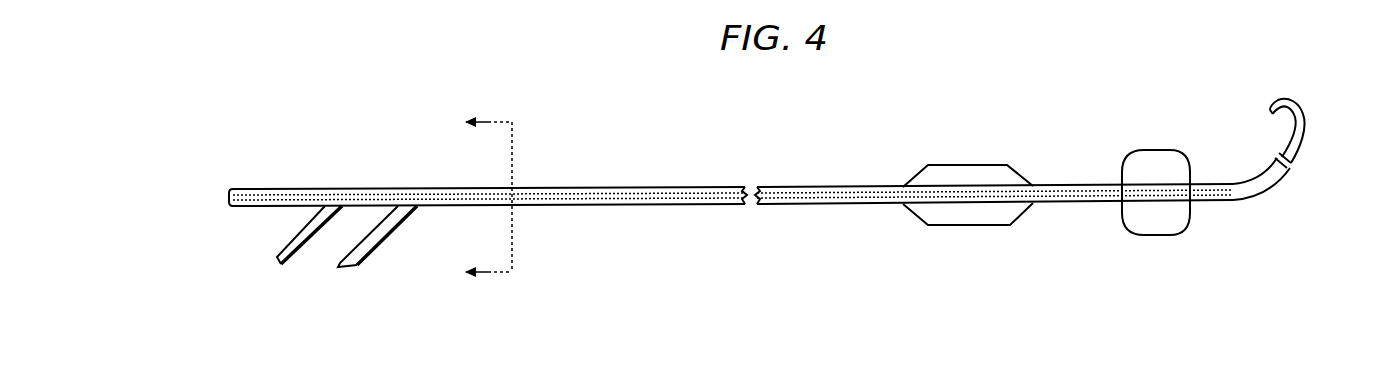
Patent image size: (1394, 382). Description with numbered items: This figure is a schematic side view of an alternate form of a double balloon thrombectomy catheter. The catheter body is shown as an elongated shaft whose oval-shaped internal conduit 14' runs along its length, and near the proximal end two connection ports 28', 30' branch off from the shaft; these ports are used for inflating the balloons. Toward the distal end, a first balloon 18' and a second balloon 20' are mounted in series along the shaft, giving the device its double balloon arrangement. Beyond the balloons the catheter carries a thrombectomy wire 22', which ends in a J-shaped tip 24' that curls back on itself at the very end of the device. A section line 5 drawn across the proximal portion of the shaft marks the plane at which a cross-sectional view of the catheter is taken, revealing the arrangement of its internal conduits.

The internal conduit 14' is at (731, 182).
The balloon 18' is at (968, 169).
The balloon 20' is at (1156, 167).
The thrombectomy wire 22' is at (1314, 174).
The J-shaped tip 24' is at (1321, 131).
The connection port 28' is at (284, 254).
The connection port 30' is at (376, 262).
The section line 5- 5 is at (481, 198).